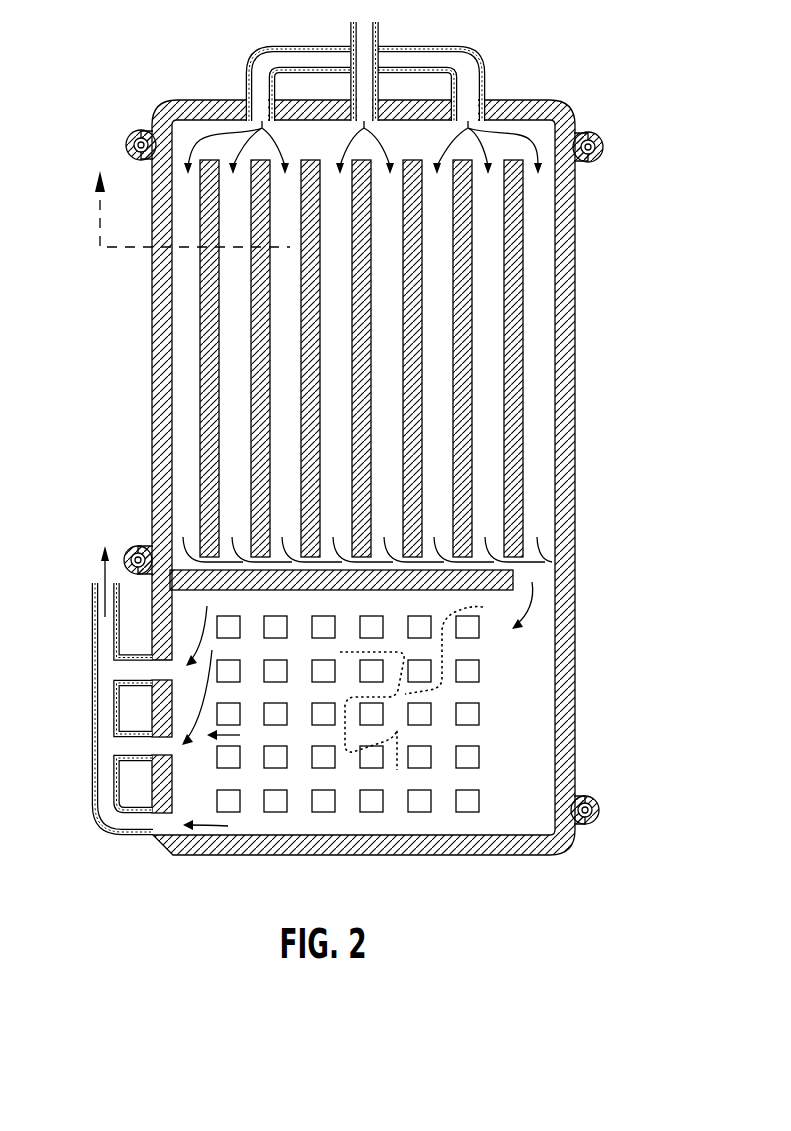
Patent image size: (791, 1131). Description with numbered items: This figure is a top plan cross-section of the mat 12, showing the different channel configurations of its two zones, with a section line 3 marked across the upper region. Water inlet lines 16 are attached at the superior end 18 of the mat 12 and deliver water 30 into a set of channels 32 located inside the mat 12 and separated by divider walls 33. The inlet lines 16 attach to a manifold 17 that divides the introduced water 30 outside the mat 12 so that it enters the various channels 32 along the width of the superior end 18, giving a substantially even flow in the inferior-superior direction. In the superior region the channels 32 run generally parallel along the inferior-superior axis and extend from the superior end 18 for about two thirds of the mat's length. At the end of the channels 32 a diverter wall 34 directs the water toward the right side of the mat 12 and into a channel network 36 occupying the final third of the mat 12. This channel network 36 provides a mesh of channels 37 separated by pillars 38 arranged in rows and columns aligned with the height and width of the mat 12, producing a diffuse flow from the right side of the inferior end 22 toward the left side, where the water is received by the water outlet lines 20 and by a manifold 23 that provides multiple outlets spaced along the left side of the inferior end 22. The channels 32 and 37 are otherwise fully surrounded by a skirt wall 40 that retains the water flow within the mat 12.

The section line 3- 3 is at (181, 201).
The mat 12 is at (344, 498).
The water inlet lines 16 is at (379, 29).
The manifold 17 is at (274, 47).
The superior end 18 is at (347, 453).
The water outlet lines 20 is at (93, 630).
The inferior end 22 is at (99, 724).
The manifold 23 is at (93, 782).
The water 30 is at (505, 142).
The channels 32 is at (356, 361).
The divider walls 33 is at (313, 342).
The diverter wall 34 is at (511, 575).
The channel network 36 is at (413, 718).
The channels 37 is at (437, 690).
The pillars 38 is at (470, 713).
The skirt wall 40 is at (150, 430).